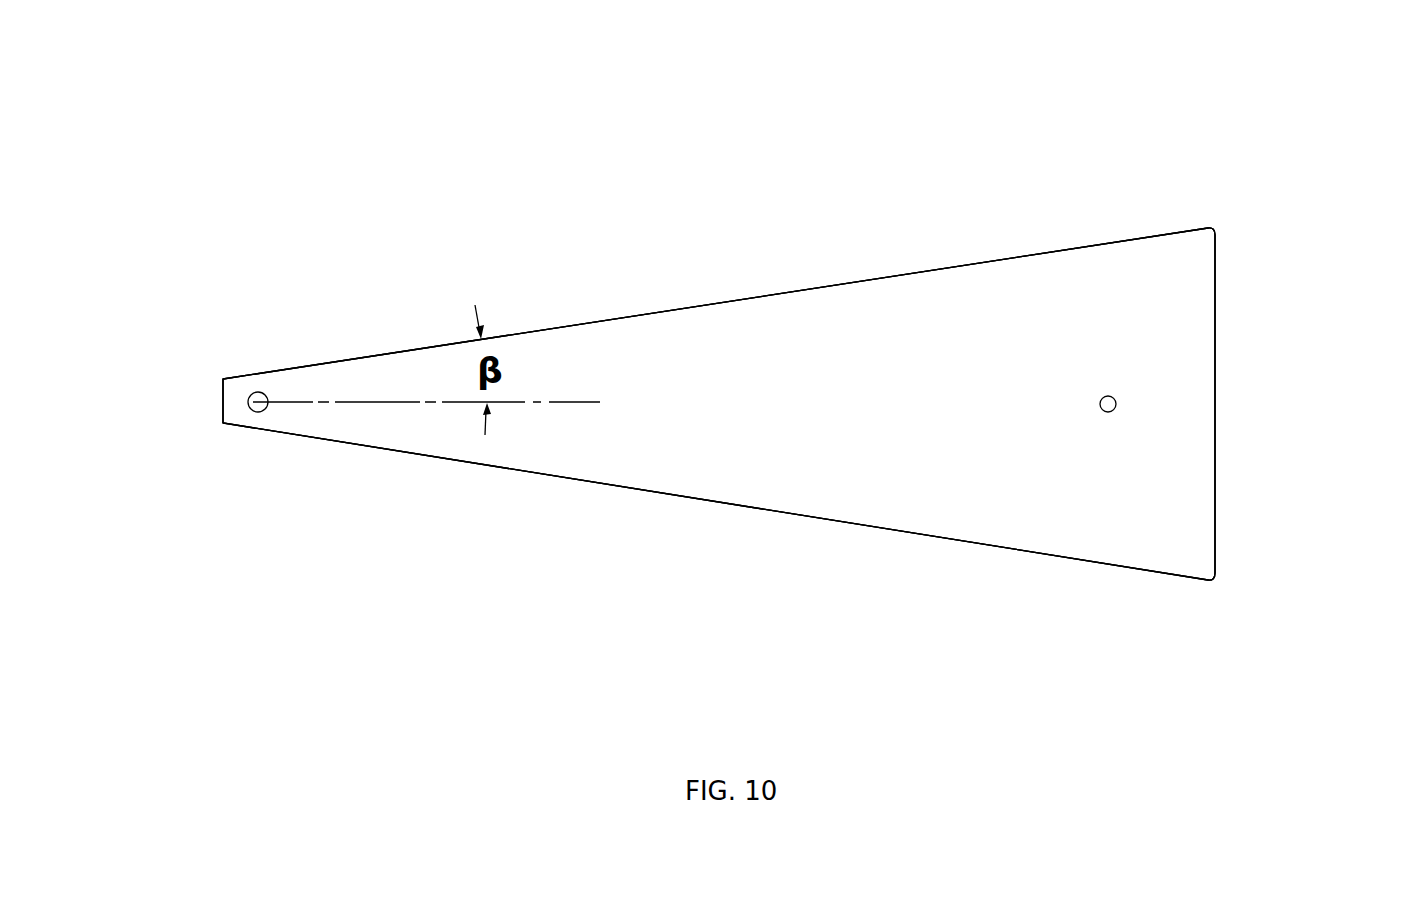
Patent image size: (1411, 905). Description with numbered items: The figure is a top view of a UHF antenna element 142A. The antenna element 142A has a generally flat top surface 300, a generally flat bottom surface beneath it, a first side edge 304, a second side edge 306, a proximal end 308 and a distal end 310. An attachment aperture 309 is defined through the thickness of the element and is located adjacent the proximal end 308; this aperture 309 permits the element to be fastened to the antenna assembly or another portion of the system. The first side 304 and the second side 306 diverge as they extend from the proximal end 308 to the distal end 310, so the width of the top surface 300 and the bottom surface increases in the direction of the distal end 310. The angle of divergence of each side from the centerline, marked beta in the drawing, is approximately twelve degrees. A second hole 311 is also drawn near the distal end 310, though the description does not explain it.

The UHF antenna element 142A is at (737, 214).
The top surface 300 is at (1145, 264).
The first side edge 304 is at (553, 327).
The second side edge 306 is at (600, 483).
The proximal end 308 is at (220, 397).
The attachment aperture 309 is at (249, 393).
The distal end 310 is at (1215, 466).
The mounting hole at wide end 311 is at (1116, 399).